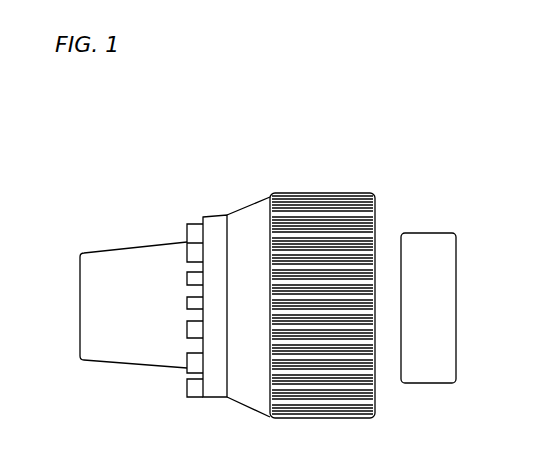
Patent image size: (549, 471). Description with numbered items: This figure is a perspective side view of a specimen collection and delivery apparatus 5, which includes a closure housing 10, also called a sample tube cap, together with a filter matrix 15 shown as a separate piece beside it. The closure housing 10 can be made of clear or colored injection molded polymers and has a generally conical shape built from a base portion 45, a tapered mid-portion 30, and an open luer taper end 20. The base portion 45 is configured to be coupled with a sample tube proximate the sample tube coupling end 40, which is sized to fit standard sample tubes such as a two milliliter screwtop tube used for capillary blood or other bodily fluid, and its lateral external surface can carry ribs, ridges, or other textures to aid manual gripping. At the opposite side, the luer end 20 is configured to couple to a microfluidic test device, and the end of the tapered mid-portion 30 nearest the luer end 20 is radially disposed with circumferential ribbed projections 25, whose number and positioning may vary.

The specimen collection and delivery apparatus 5 is at (402, 143).
The closure housing 10 is at (255, 192).
The filter matrix 15 is at (440, 233).
The open luer taper end 20 is at (78, 302).
The circumferential ribbed projections 25 is at (200, 232).
The tapered mid-portion 30 is at (213, 213).
The sample tube coupling end 40 is at (375, 362).
The base portion 45 is at (307, 197).